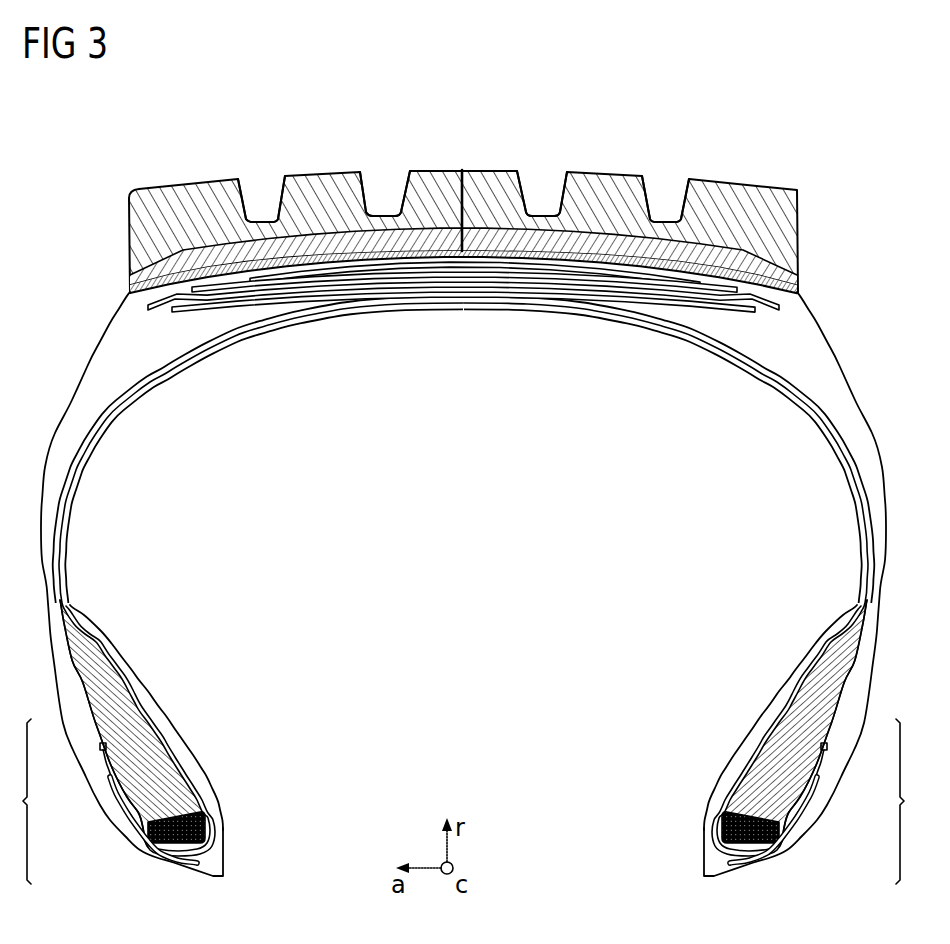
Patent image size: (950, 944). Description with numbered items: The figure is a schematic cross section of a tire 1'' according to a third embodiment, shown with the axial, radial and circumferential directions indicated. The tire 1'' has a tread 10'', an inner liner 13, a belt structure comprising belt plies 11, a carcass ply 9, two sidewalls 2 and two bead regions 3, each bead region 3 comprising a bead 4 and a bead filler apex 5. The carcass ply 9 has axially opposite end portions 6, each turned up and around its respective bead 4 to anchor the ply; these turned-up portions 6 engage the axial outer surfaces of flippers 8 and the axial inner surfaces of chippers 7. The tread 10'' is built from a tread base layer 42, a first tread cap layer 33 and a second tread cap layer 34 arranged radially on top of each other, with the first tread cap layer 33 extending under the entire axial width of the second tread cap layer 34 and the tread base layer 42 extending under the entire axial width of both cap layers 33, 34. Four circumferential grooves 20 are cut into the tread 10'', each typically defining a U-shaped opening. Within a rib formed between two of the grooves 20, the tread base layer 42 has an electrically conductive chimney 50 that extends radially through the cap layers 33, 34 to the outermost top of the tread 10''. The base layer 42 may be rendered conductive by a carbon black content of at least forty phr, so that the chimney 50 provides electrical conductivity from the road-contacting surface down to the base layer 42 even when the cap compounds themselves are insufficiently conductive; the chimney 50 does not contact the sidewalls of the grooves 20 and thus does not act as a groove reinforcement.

The tire 1'' is at (465, 495).
The tread 10'' is at (477, 210).
The sidewall 2 is at (66, 416).
The bead region 3 is at (465, 742).
The bead 4 is at (195, 826).
The bead filler apex 5 is at (134, 729).
The axial end portion of the carcass ply 6 is at (101, 747).
The chipper 7 is at (110, 780).
The flipper 8 is at (136, 818).
The carcass ply 9 is at (195, 335).
The belt plies 11 is at (583, 289).
The inner liner 13 is at (155, 378).
The circumferential grooves 20 is at (256, 205).
The first tread cap layer 33 is at (771, 262).
The second tread cap layer 34 is at (784, 214).
The tread base layer 42 is at (806, 292).
The chimney 50 is at (462, 168).